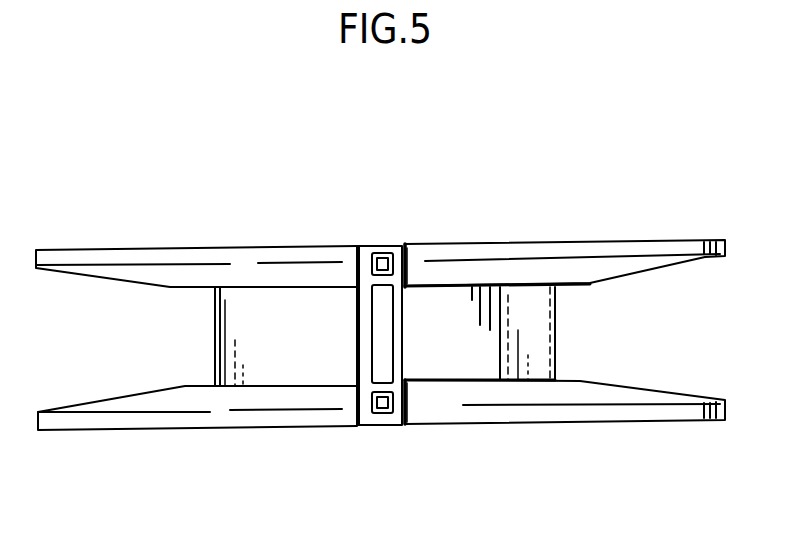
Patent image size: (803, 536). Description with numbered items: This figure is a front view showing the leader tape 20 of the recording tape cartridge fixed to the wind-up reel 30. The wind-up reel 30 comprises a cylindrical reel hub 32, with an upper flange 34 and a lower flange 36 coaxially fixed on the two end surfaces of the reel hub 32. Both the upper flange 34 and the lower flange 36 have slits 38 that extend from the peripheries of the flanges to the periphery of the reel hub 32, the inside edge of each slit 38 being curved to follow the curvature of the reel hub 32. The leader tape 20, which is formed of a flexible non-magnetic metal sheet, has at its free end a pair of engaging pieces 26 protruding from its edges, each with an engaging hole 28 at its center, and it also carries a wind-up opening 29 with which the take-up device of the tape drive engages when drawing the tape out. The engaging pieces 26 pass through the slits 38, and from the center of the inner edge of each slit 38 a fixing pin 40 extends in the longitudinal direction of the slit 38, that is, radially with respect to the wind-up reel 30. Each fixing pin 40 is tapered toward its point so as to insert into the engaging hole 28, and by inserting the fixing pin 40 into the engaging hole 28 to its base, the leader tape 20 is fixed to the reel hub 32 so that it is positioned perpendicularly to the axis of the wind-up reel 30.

The leader tape 20 is at (535, 352).
The engaging pieces 26 is at (358, 249).
The engaging hole 28 is at (372, 255).
The wind-up opening 29 is at (378, 327).
The wind-up reel 30 is at (613, 217).
The reel hub 32 is at (258, 325).
The upper flange 34 is at (684, 250).
The lower flange 36 is at (668, 402).
The slits 38 is at (406, 262).
The fixing pin 40 is at (395, 256).